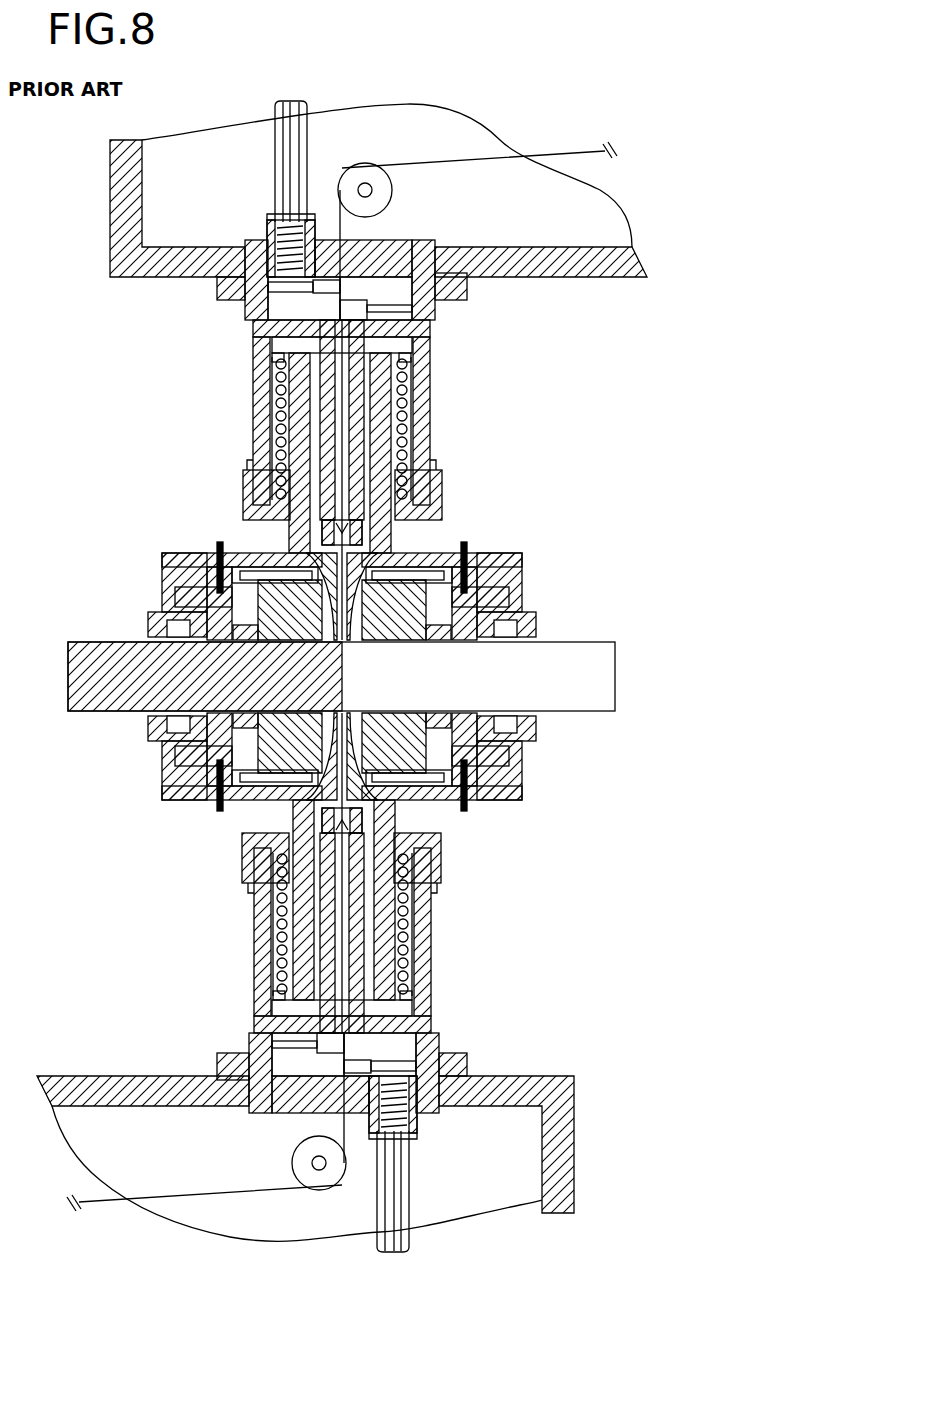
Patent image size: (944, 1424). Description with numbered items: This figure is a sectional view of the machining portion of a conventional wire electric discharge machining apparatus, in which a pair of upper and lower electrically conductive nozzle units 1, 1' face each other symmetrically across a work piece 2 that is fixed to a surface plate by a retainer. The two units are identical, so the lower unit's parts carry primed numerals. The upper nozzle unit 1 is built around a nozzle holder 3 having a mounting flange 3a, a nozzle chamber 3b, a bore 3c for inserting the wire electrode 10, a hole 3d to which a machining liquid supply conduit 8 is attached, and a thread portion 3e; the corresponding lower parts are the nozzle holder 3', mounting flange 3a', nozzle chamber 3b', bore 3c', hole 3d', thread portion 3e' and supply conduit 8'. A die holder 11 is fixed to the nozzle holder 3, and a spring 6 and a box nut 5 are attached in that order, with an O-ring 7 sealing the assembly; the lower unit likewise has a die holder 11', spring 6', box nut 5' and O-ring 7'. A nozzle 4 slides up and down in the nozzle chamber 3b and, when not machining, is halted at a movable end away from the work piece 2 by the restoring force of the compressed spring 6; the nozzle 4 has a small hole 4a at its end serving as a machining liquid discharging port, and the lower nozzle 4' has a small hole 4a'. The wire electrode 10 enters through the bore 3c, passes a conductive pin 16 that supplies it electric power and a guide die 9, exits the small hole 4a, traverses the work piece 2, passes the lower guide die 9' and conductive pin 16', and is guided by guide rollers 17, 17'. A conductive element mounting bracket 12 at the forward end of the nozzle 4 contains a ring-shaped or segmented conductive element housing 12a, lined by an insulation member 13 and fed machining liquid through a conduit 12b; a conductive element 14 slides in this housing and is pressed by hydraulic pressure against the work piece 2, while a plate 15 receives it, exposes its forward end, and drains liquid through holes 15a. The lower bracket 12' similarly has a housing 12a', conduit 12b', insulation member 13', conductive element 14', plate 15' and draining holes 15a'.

The upper electrically conductive nozzle unit 1 is at (672, 490).
The lower electrically conductive nozzle unit 1' is at (674, 834).
The work piece 2 is at (612, 668).
The nozzle holder 3 is at (316, 412).
The nozzle holder 3' is at (317, 940).
The mounting flange 3a is at (377, 280).
The mounting flange 3a' is at (387, 1071).
The nozzle chamber 3b is at (308, 445).
The nozzle chamber 3b' is at (380, 908).
The bore for inserting the wire electrode 3c is at (361, 242).
The bore for inserting the wire electrode 3c' is at (380, 1177).
The hole 3d is at (309, 142).
The hole 3d' is at (436, 1194).
The thread portion 3e is at (308, 471).
The thread portion 3e' is at (307, 880).
The nozzle 4 is at (417, 453).
The nozzle 4' is at (385, 900).
The small hole 4a is at (398, 562).
The small hole 4a' is at (404, 784).
The box nut 5 is at (312, 495).
The box nut 5' is at (309, 858).
The spring 6 is at (311, 428).
The spring 6' is at (313, 924).
The O-ring 7 is at (372, 362).
The O-ring 7' is at (379, 988).
The machining liquid supply conduit 8 is at (286, 132).
The machining liquid supply conduit 8' is at (420, 1213).
The guide die 9 is at (309, 533).
The guide die 9' is at (309, 820).
The wire electrode 10 is at (525, 152).
The die holder 11 is at (400, 480).
The die holder 11' is at (406, 873).
The conductive element mounting bracket 12 is at (478, 580).
The conductive element mounting bracket 12' is at (382, 770).
The conductive element housing 12a is at (392, 603).
The conductive element housing 12a' is at (395, 749).
The conduit 12b is at (389, 548).
The conduit 12b' is at (392, 802).
The insulation member 13 is at (219, 580).
The insulation member 13' is at (317, 777).
The conductive element 14 is at (304, 553).
The conductive element 14' is at (303, 803).
The plate 15 is at (308, 626).
The plate 15' is at (304, 733).
The liquid draining holes 15a is at (165, 629).
The liquid draining holes 15a' is at (163, 728).
The conductive pin 16 is at (308, 306).
The conductive pin 16' is at (311, 1044).
The guide roller 17 is at (477, 231).
The guide roller 17' is at (206, 1122).